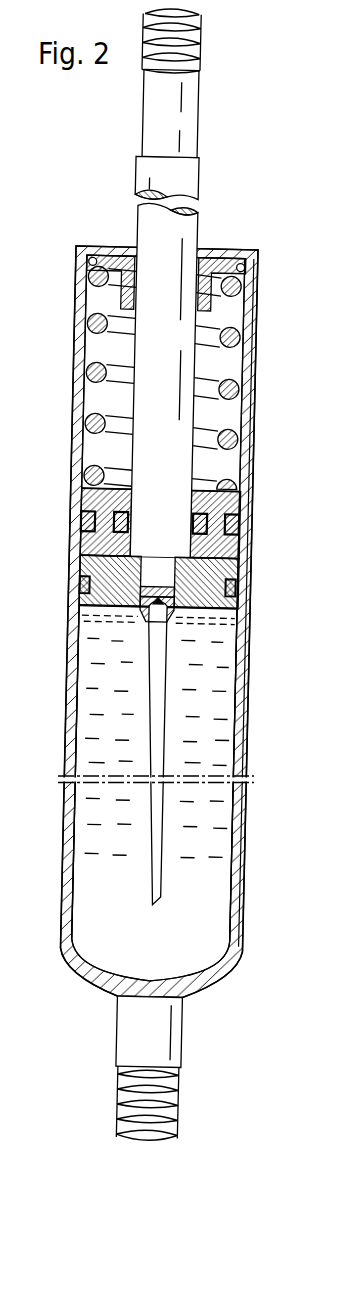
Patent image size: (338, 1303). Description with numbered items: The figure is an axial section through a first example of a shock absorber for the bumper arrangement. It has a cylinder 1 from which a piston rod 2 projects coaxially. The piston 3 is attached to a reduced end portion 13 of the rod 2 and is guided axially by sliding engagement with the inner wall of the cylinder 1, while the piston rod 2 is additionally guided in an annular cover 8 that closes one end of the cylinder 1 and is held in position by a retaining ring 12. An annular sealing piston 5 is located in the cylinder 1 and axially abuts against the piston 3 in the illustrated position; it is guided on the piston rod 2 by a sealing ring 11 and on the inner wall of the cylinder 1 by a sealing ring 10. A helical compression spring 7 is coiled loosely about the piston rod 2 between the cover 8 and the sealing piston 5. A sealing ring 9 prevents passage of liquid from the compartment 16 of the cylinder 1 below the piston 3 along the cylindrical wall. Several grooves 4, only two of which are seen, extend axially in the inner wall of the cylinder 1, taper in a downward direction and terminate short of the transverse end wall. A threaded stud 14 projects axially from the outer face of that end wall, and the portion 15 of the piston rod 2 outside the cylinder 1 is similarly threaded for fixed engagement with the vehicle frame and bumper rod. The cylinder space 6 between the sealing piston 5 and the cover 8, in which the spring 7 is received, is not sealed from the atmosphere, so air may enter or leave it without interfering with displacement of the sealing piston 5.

The cylinder 1 is at (87, 690).
The piston rod 2 is at (186, 178).
The piston 3 is at (240, 576).
The grooves 4 is at (244, 716).
The sealing piston 5 is at (98, 507).
The cylinder space 6 is at (97, 357).
The helical compression spring 7 is at (238, 340).
The annular cover 8 is at (228, 262).
The sealing ring 9 is at (243, 597).
The sealing ring 10 is at (90, 527).
The sealing ring 11 is at (134, 528).
The retaining ring 12 is at (89, 259).
The reduced end portion 13 is at (190, 622).
The threaded stud 14 is at (187, 1032).
The portion of the piston rod 15 is at (187, 122).
The compartment 16 is at (103, 743).